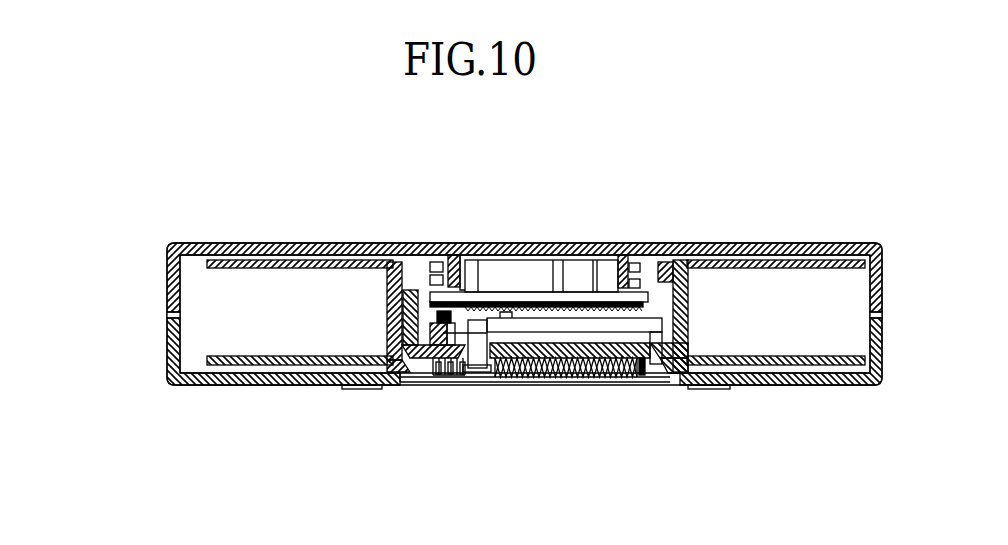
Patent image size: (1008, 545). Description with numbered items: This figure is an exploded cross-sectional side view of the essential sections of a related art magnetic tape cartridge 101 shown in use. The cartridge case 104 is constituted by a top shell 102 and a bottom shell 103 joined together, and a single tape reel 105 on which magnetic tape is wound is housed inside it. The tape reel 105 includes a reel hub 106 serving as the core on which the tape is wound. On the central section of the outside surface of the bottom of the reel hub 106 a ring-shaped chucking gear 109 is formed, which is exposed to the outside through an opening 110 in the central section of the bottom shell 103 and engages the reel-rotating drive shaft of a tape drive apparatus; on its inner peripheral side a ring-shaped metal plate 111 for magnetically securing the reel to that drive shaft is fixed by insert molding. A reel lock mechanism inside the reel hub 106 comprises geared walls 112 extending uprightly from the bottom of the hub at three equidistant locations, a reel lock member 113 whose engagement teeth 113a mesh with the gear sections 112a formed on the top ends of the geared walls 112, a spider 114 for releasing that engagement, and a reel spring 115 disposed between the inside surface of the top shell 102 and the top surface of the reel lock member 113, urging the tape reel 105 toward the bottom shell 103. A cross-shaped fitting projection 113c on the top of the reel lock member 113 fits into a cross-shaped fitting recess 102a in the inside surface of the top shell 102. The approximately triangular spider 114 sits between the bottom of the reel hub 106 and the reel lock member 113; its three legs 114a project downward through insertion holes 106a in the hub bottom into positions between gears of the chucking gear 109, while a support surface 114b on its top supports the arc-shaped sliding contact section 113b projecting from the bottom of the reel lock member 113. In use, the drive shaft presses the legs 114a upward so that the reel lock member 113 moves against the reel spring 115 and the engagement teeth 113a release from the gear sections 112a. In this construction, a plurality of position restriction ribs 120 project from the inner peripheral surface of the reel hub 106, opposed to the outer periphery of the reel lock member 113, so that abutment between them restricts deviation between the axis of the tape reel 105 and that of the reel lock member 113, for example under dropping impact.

The magnetic tape cartridge 101 is at (163, 222).
The top shell 102 is at (167, 250).
The fitting recess 102a is at (470, 262).
The bottom shell 103 is at (167, 320).
The cartridge case 104 is at (104, 262).
The tape reel 105 is at (297, 245).
The reel hub 106 is at (387, 292).
The insertion holes 106a is at (665, 347).
The chucking gear 109 is at (400, 388).
The opening 110 is at (673, 377).
The metal plate 111 is at (607, 377).
The geared walls 112 is at (447, 377).
The gear sections 112a is at (430, 319).
The reel lock member 113 is at (571, 292).
The engagement teeth 113a is at (648, 300).
The sliding contact section 113b is at (508, 333).
The fitting projection 113c is at (507, 280).
The spider 114 is at (498, 377).
The legs 114a is at (473, 377).
The support surface 114b is at (566, 318).
The reel spring 115 is at (654, 262).
The position restriction ribs 120 is at (432, 268).